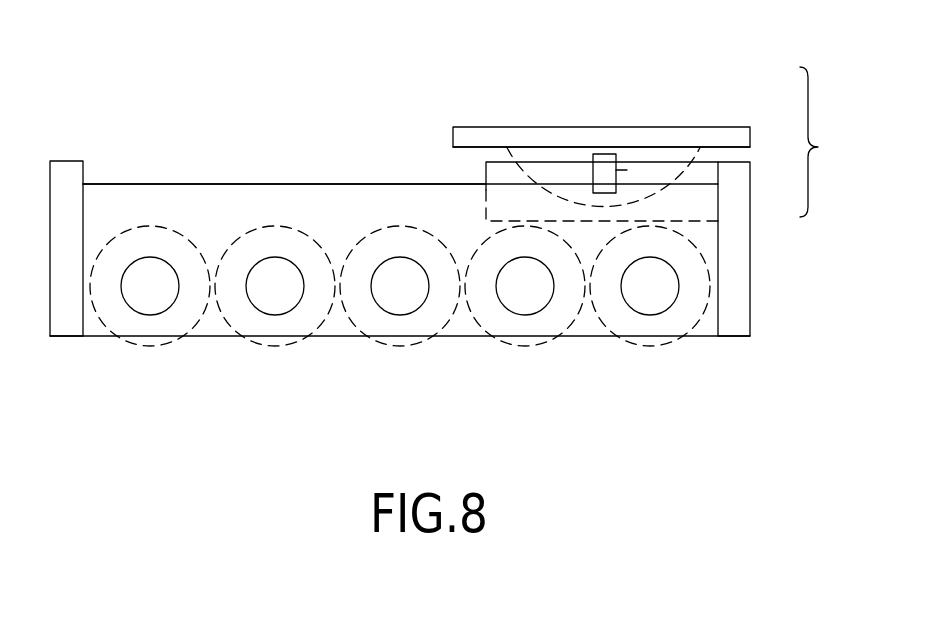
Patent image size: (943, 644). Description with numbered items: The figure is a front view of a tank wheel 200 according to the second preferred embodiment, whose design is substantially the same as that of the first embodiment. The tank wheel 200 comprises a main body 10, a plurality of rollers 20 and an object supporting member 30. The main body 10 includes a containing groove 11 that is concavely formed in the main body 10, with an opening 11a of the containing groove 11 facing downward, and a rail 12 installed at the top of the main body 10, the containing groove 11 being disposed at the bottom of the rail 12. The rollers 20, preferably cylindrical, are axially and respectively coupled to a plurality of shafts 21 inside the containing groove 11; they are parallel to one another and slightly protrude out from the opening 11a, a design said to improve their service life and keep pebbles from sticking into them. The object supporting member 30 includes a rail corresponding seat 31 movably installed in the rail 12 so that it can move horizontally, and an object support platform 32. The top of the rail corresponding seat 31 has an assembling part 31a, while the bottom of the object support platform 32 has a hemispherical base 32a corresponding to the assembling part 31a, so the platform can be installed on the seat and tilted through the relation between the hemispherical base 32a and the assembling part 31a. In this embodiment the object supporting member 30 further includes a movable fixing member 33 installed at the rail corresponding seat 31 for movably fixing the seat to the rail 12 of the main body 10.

The tank wheel 200 is at (172, 36).
The main body 10 is at (64, 167).
The containing groove 11 is at (90, 318).
The opening 11a is at (719, 337).
The rail 12 is at (100, 184).
The rollers 20 is at (150, 346).
The shafts 21 is at (135, 297).
The object supporting member 30 is at (622, 144).
The rail corresponding seat 31 is at (710, 172).
The assembling part 31a is at (584, 200).
The object support platform 32 is at (745, 138).
The hemispherical base 32a is at (505, 149).
The movable fixing member 33 is at (627, 171).